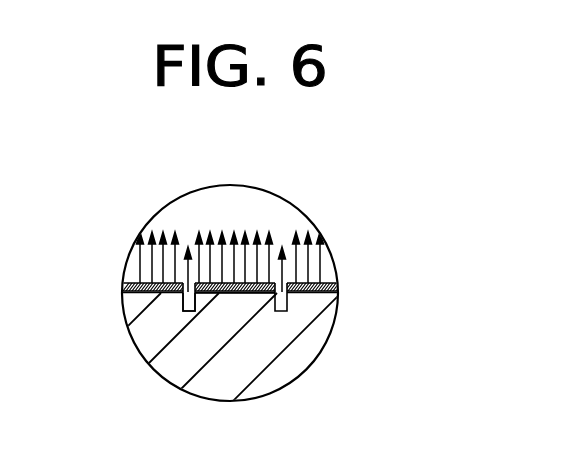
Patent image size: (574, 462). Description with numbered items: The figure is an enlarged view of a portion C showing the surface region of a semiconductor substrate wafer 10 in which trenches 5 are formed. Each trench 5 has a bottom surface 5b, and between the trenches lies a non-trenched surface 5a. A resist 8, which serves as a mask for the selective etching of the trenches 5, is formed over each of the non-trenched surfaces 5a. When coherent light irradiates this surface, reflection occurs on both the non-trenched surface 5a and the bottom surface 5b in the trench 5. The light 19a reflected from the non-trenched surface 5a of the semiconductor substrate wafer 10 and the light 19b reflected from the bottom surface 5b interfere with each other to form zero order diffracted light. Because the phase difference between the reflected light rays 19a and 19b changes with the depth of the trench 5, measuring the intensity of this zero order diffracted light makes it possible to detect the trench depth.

The portion C is at (326, 220).
The trench 5 is at (182, 304).
The non-trenched surface 5a is at (237, 297).
The bottom surface 5b is at (184, 313).
The resist 8 is at (333, 284).
The semiconductor substrate wafer 10 is at (287, 338).
The light reflected from the non-trenched surface 19a is at (170, 230).
The light reflected from the bottom surface 19b is at (190, 236).